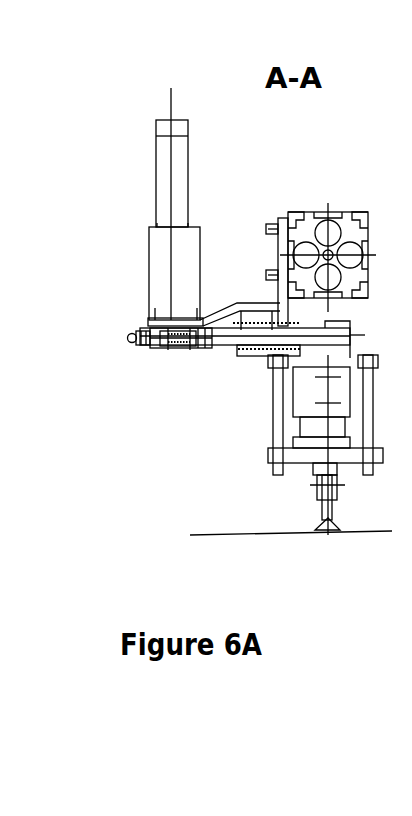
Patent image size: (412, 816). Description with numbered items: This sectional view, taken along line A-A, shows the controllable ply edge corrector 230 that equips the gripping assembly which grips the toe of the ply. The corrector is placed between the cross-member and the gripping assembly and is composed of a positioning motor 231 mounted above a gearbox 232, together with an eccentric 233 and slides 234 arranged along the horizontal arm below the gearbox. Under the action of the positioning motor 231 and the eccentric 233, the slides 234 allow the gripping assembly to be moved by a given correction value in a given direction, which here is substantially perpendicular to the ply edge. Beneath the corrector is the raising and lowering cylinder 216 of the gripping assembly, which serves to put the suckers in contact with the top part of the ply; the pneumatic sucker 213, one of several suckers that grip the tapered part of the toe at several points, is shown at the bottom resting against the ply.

The pneumatic sucker 213 is at (312, 528).
The raising and lowering cylinder 216 is at (313, 402).
The ply edge corrector 230 is at (128, 333).
The positioning motor 231 is at (156, 180).
The gearbox 232 is at (162, 254).
The eccentric 233 is at (172, 347).
The slides 234 is at (230, 345).